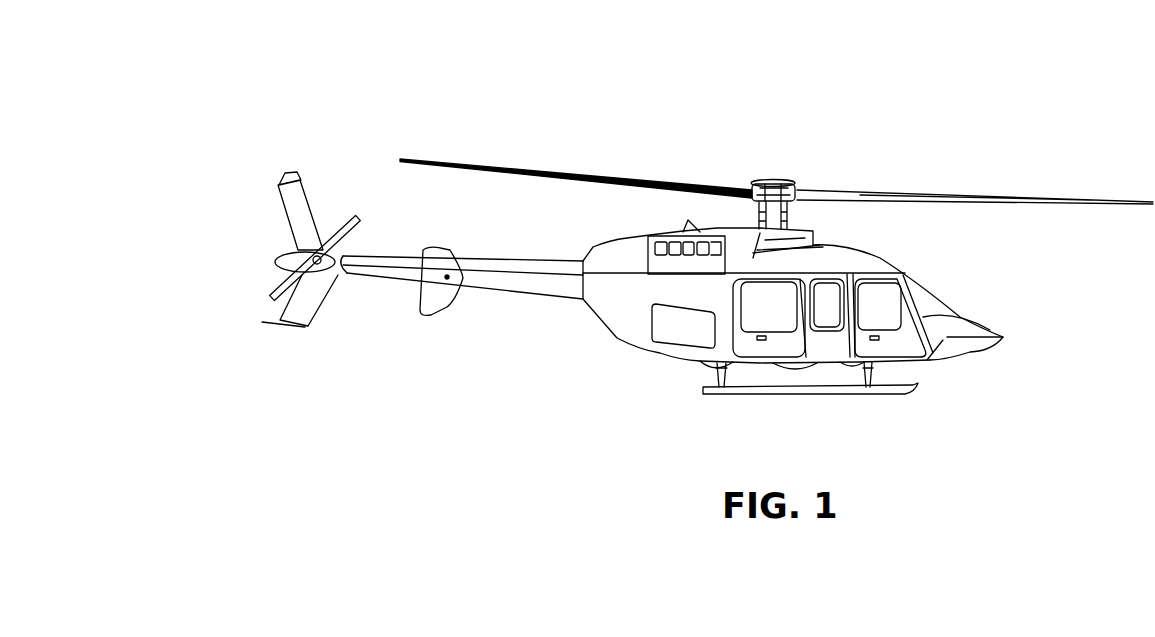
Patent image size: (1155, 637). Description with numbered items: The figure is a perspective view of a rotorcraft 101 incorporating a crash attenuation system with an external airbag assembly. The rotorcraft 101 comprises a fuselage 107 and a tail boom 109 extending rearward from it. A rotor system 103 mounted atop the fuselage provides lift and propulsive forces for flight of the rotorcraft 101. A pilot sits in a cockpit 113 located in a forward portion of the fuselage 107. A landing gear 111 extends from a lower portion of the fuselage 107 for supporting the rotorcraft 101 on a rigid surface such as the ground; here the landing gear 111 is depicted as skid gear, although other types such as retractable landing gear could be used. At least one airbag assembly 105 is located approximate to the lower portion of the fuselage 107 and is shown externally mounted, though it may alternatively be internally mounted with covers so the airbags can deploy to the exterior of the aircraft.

The rotorcraft 101 is at (459, 106).
The rotor system 103 is at (750, 182).
The airbag assembly 105 is at (686, 381).
The fuselage 107 is at (618, 340).
The tail boom 109 is at (398, 254).
The landing gear 111 is at (797, 392).
The cockpit 113 is at (937, 292).